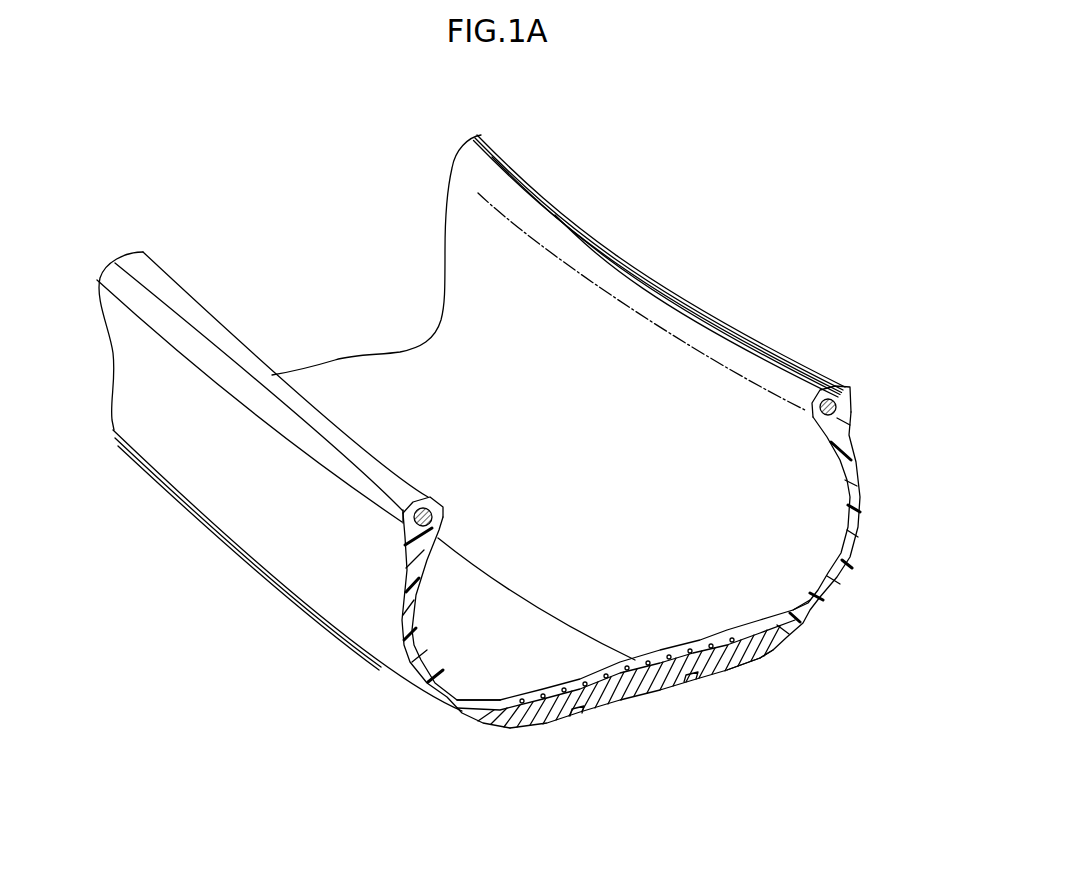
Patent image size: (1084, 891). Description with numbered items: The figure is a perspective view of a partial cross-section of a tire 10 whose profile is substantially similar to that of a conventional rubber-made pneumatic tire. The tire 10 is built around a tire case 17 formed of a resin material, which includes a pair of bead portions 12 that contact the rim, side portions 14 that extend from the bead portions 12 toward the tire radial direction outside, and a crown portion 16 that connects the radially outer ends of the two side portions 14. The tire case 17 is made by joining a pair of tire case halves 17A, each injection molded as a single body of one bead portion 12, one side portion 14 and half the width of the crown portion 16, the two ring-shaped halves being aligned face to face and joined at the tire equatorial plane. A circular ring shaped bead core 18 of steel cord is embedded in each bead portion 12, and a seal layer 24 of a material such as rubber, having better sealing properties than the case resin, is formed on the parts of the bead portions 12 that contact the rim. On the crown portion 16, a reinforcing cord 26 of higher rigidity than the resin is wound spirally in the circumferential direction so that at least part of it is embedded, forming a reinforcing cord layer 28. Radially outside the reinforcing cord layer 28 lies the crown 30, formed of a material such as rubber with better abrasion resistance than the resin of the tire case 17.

The tire 10 is at (697, 242).
The bead portion 12 is at (393, 472).
The side portion 14 is at (354, 586).
The crown portion 16 is at (722, 656).
The tire case 17 is at (490, 552).
The tire case half 17A is at (503, 611).
The bead core 18 is at (440, 513).
The seal layer 24 is at (343, 458).
The reinforcing cord 26 is at (565, 694).
The reinforcing cord layer 28 is at (607, 689).
The crown 30 is at (776, 653).